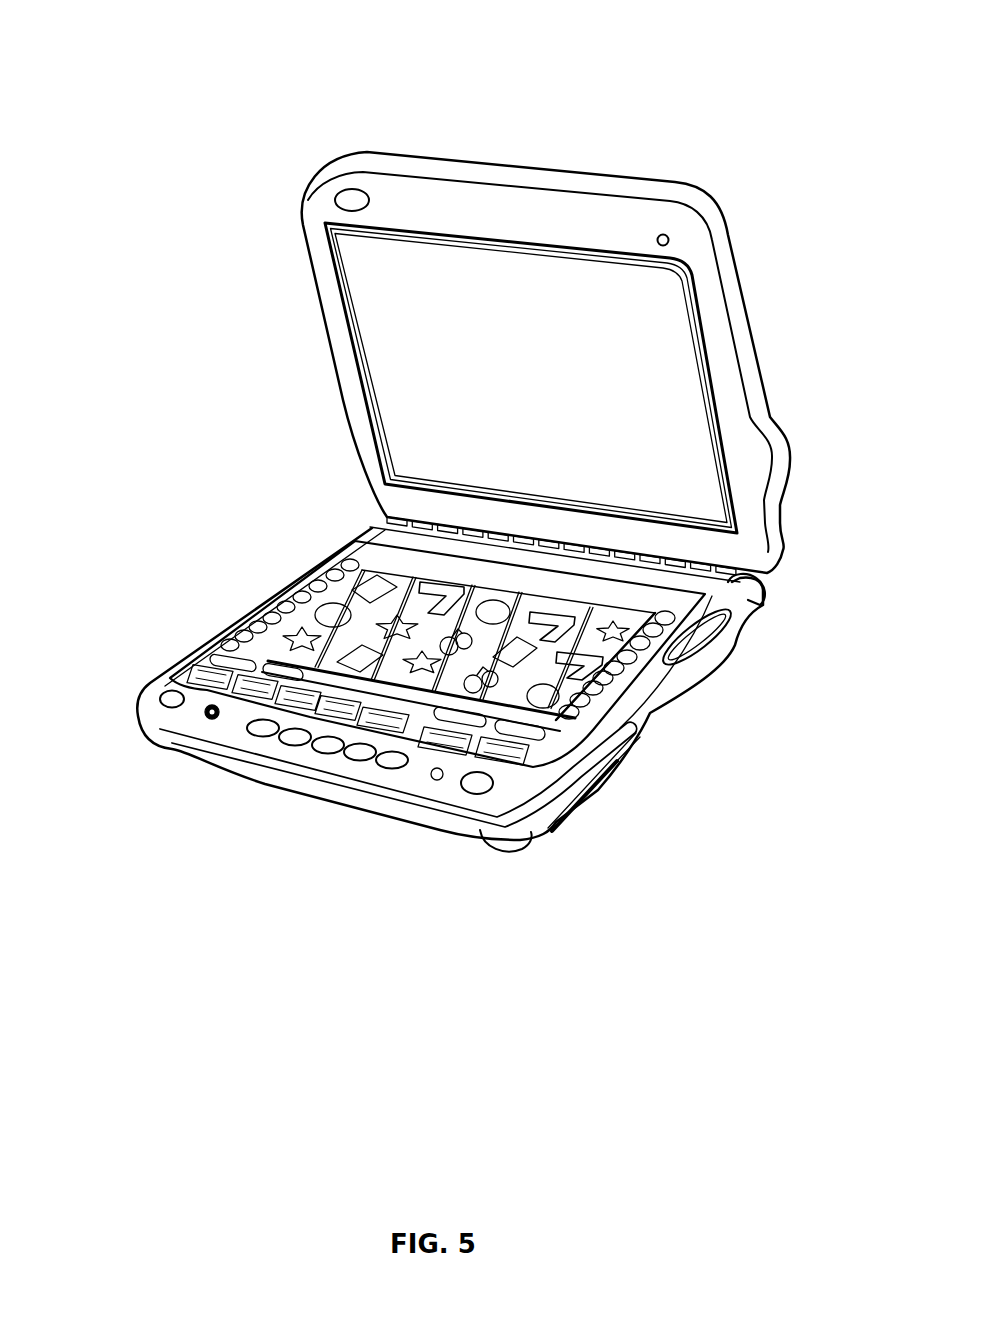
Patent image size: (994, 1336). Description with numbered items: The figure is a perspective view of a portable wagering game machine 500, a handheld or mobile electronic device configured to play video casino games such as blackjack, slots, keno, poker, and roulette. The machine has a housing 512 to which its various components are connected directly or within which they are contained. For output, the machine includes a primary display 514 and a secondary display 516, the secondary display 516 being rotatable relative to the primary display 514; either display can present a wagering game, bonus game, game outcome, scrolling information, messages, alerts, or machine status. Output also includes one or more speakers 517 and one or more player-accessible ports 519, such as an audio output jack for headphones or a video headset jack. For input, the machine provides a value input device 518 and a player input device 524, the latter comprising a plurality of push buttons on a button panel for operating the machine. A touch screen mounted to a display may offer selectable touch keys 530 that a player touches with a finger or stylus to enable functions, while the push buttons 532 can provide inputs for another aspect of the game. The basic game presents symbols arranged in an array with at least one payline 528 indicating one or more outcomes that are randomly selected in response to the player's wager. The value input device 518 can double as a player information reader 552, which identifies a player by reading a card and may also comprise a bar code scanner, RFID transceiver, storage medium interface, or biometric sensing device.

The portable wagering game machine 500 is at (436, 460).
The housing 512 is at (291, 579).
The primary display 514 is at (368, 558).
The secondary display 516 is at (388, 346).
The speakers 517 is at (160, 700).
The value input device 518 is at (624, 738).
The player-accessible ports 519 is at (213, 719).
The player input device 524 is at (307, 755).
The payline 528 is at (735, 583).
The touch keys 530 is at (530, 757).
The push buttons 532 is at (640, 677).
The player information reader 552 is at (740, 634).